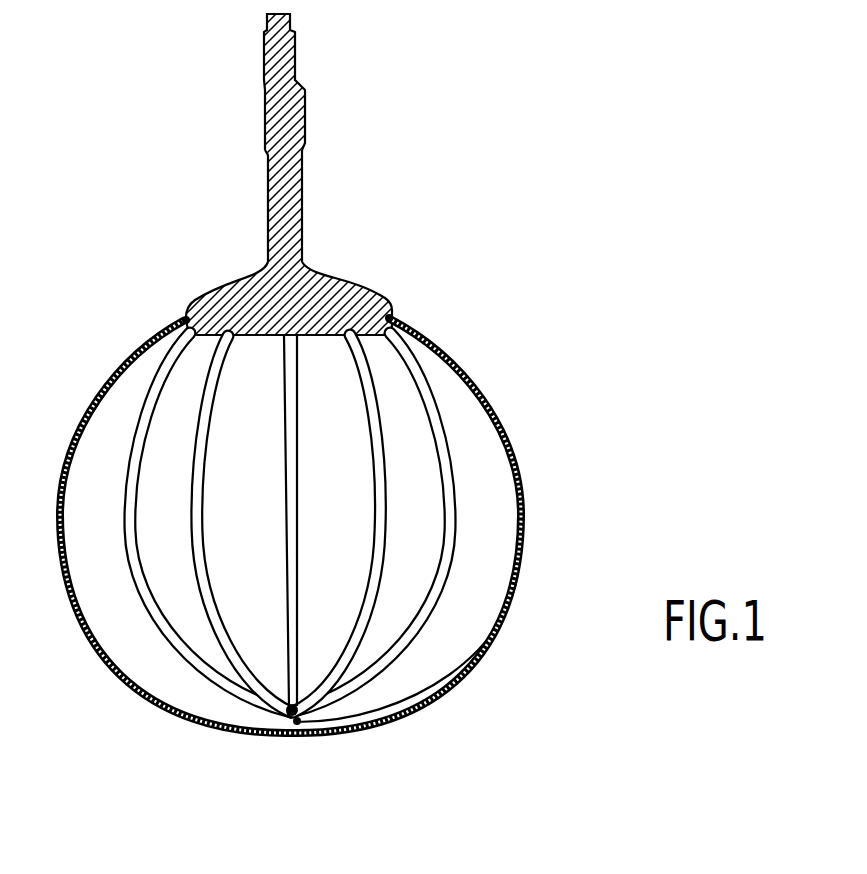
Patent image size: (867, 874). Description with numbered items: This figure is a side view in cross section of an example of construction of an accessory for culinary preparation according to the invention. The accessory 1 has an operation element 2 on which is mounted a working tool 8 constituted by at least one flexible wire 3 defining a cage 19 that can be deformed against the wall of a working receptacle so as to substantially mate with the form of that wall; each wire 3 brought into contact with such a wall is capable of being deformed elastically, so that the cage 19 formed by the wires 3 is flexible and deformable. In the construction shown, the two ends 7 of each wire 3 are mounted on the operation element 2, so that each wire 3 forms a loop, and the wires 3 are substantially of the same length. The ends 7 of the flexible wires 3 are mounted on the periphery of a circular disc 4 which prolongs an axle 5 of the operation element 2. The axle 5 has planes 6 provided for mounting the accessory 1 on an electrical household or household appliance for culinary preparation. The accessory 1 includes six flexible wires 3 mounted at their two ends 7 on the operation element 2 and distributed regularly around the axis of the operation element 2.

The accessory 1 is at (538, 382).
The operation element 2 is at (303, 190).
The flexible wire 3 is at (527, 515).
The circular disc 4 is at (333, 277).
The axle 5 is at (270, 230).
The planes 6 is at (265, 110).
The ends 7 is at (391, 316).
The working tool 8 is at (478, 662).
The cage 19 is at (345, 525).